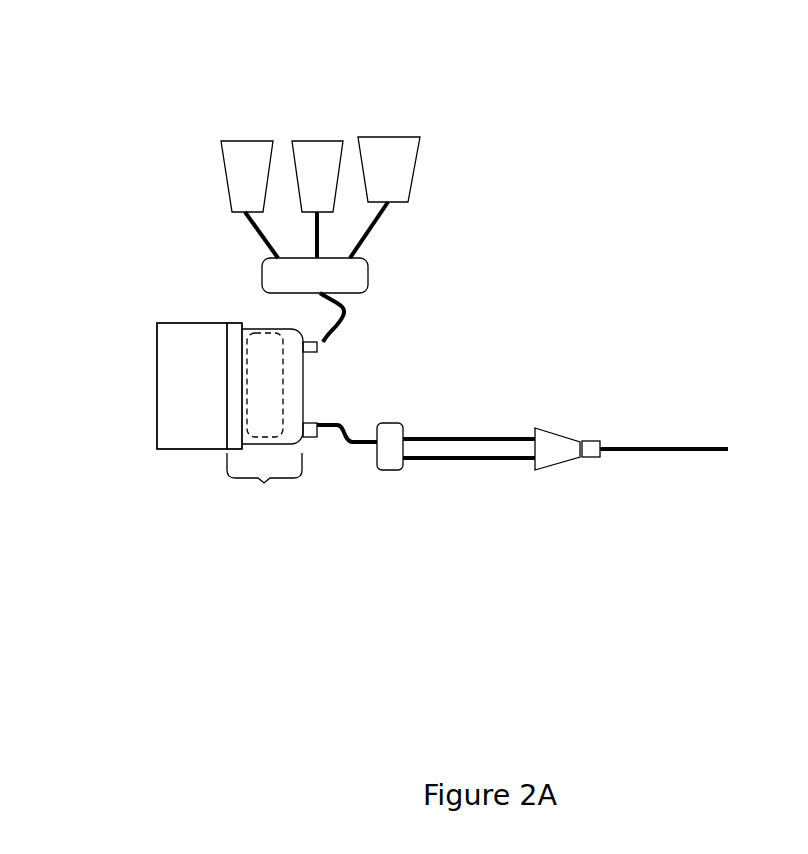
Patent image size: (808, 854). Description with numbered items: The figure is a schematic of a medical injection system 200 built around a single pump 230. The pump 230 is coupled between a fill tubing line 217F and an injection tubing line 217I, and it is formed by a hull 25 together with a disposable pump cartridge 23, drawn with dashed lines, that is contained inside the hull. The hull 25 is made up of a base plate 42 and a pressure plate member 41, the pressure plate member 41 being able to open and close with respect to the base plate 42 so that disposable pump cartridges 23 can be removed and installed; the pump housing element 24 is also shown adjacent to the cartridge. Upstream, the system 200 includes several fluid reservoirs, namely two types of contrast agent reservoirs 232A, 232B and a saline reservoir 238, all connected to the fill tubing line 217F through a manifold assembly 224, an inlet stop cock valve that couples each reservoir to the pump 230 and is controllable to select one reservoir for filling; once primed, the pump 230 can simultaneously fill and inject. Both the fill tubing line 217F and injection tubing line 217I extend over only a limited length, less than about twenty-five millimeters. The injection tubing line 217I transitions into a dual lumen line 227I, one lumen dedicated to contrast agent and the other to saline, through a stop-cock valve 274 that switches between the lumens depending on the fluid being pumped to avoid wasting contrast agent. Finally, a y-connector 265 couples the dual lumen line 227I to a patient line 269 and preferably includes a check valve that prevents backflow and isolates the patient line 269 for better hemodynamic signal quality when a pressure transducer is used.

The medical injection system 200 is at (672, 95).
The pump 230 is at (182, 298).
The pump 24 is at (177, 392).
The base plate 42 is at (233, 433).
The pressure plate member 41 is at (302, 403).
The disposable pump cartridge 23 is at (267, 360).
The hull 25 is at (264, 483).
The manifold assembly 224 is at (300, 286).
The contrast agent reservoir 232A is at (232, 156).
The contrast agent reservoir 232B is at (307, 147).
The saline reservoir 238 is at (393, 150).
The fill tubing line 217F is at (323, 343).
The injection tubing line 217I is at (357, 443).
The stop-cock valve 274 is at (392, 458).
The dual lumen line 227I is at (408, 425).
The y-connector 265 is at (572, 440).
The patient line 269 is at (660, 445).